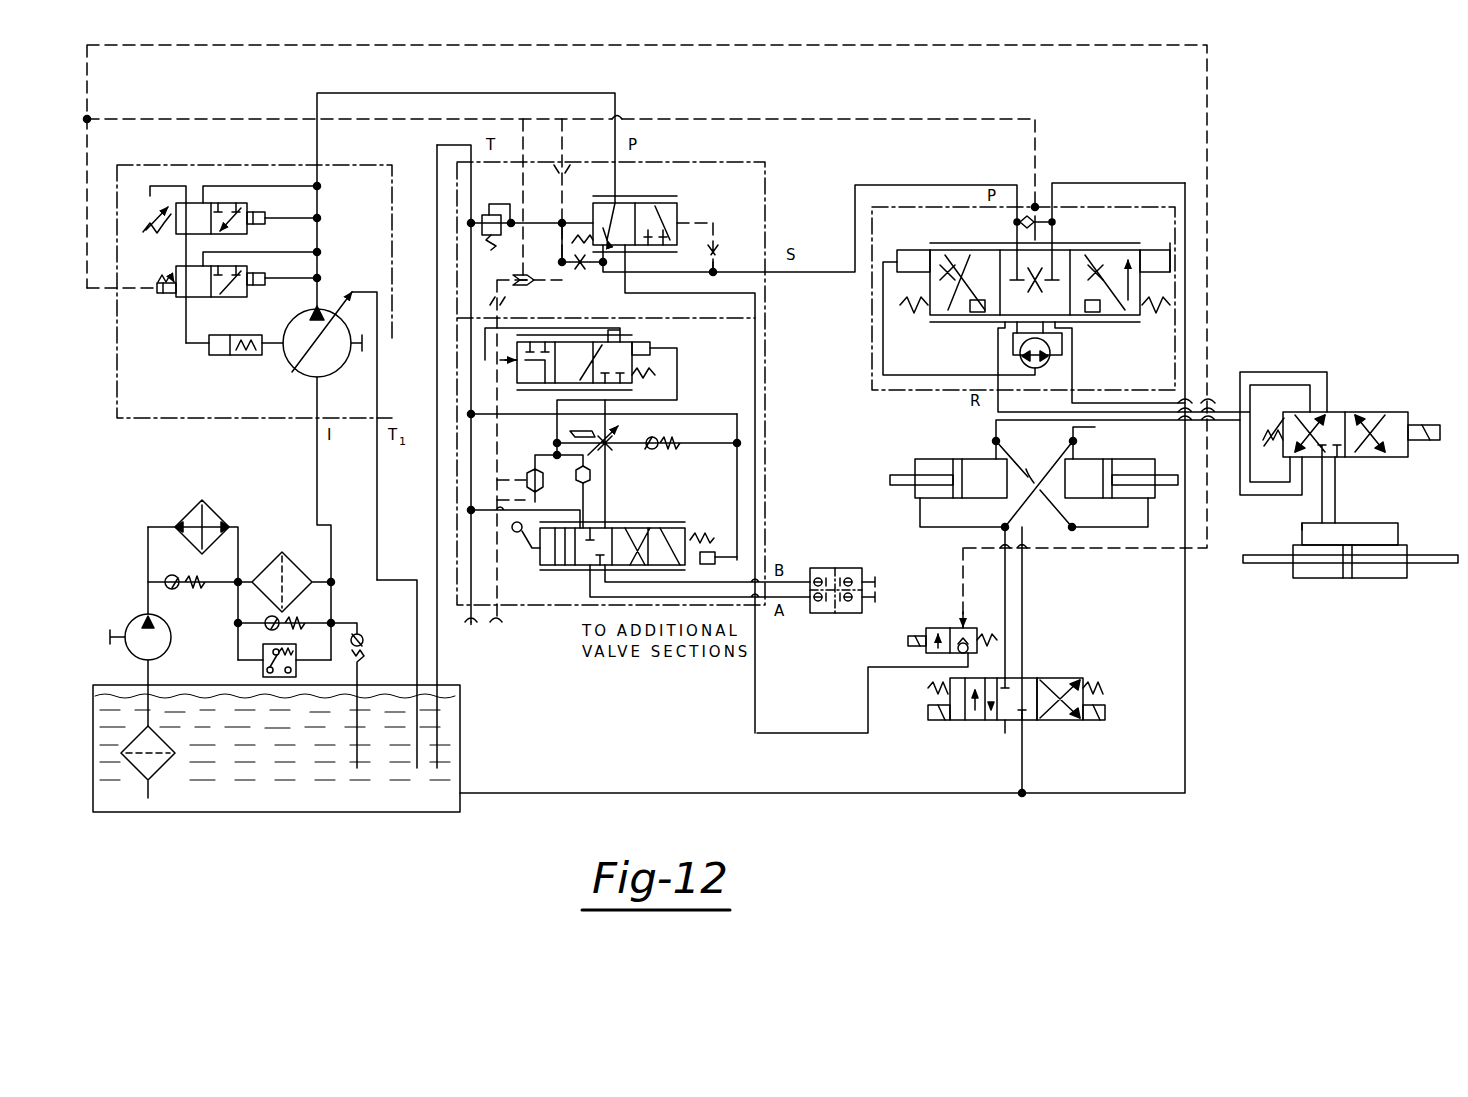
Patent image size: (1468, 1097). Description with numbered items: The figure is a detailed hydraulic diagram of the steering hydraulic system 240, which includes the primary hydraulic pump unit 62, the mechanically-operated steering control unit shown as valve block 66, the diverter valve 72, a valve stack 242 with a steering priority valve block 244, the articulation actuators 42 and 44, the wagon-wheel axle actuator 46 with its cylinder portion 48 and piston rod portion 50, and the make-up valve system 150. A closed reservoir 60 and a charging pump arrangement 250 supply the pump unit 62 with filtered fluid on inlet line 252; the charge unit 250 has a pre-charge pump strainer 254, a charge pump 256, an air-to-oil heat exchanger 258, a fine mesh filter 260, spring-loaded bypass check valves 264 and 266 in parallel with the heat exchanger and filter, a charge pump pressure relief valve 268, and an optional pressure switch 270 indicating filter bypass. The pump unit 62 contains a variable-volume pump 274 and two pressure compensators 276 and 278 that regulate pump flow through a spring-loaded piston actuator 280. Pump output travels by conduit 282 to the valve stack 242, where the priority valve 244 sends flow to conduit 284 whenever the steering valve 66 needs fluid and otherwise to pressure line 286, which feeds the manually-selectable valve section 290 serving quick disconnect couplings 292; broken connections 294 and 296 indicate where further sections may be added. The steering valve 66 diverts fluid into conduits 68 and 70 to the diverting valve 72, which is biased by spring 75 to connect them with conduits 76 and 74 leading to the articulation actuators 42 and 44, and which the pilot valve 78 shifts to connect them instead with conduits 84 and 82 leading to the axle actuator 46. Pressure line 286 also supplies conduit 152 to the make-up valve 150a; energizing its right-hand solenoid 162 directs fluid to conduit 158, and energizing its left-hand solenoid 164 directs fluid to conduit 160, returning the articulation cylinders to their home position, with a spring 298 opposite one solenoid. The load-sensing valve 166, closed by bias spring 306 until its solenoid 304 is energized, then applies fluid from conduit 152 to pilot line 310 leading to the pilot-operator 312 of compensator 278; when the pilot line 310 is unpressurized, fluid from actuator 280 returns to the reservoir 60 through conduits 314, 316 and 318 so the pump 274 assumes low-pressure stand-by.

The articulation actuator 42 is at (1180, 450).
The articulation actuator 44 is at (923, 447).
The wagon-wheel axle actuator 46 is at (1345, 596).
The cylinder portion 48 is at (1377, 578).
The piston rod portion 50 is at (1280, 565).
The fluid reservoir 60 is at (143, 196).
The primary hydraulic pump unit 62 is at (115, 395).
The steering control valve 66 is at (870, 376).
The conduit 68 is at (998, 410).
The conduit 70 is at (1130, 403).
The diverting valve 72 is at (1412, 358).
The conduit 74 is at (1095, 427).
The spring 75 is at (1285, 408).
The conduit 76 is at (996, 427).
The pilot valve 78 is at (1435, 425).
The conduit 82 is at (1300, 530).
The conduit 84 is at (1405, 490).
The make-up valve system 150 is at (1033, 701).
The make-up valve 150a is at (1041, 678).
The conduit 152 is at (820, 698).
The conduit 158 is at (1052, 512).
The conduit 160 is at (1007, 529).
The right-hand solenoid 162 is at (1103, 684).
The left-hand solenoid 164 is at (940, 722).
The load-sensing valve 166 is at (950, 582).
The hydraulic system 240 is at (1243, 672).
The valve stack 242 is at (845, 152).
The steering priority valve block 244 is at (743, 219).
The charging pump arrangement 250 is at (170, 470).
The inlet line 252 is at (310, 490).
The pre-charge pump strainer 254 is at (195, 718).
The charge pump 256 is at (175, 602).
The air-to-oil heat exchanger 258 is at (190, 495).
The fine mesh filter 260 is at (300, 537).
The spring-loaded bypass check valve 264 is at (190, 565).
The spring-loaded bypass check valve 266 is at (304, 605).
The charge pump pressure relief valve 268 is at (350, 669).
The spring-loaded pressure switch 270 is at (262, 670).
The variable-volume pump 274 is at (305, 380).
The pressure compensator 276 is at (238, 234).
The pressure compensator 278 is at (233, 297).
The spring-loaded piston actuator 280 is at (233, 356).
The conduit 282 is at (439, 92).
The hydraulic conduit 284 is at (958, 183).
The pressure line 286 is at (765, 375).
The manually-selectable hydraulic valve section 290 is at (812, 455).
The quick disconnect couplings 292 is at (855, 548).
The broken connection 294 is at (471, 630).
The broken connection 296 is at (497, 630).
The solenoid 298 is at (1100, 722).
The solenoid 304 is at (913, 636).
The bias spring 306 is at (1075, 612).
The pilot line 310 is at (118, 293).
The pilot-operator 312 is at (168, 300).
The conduit 314 is at (185, 337).
The conduit 316 is at (182, 255).
The conduit 318 is at (200, 155).